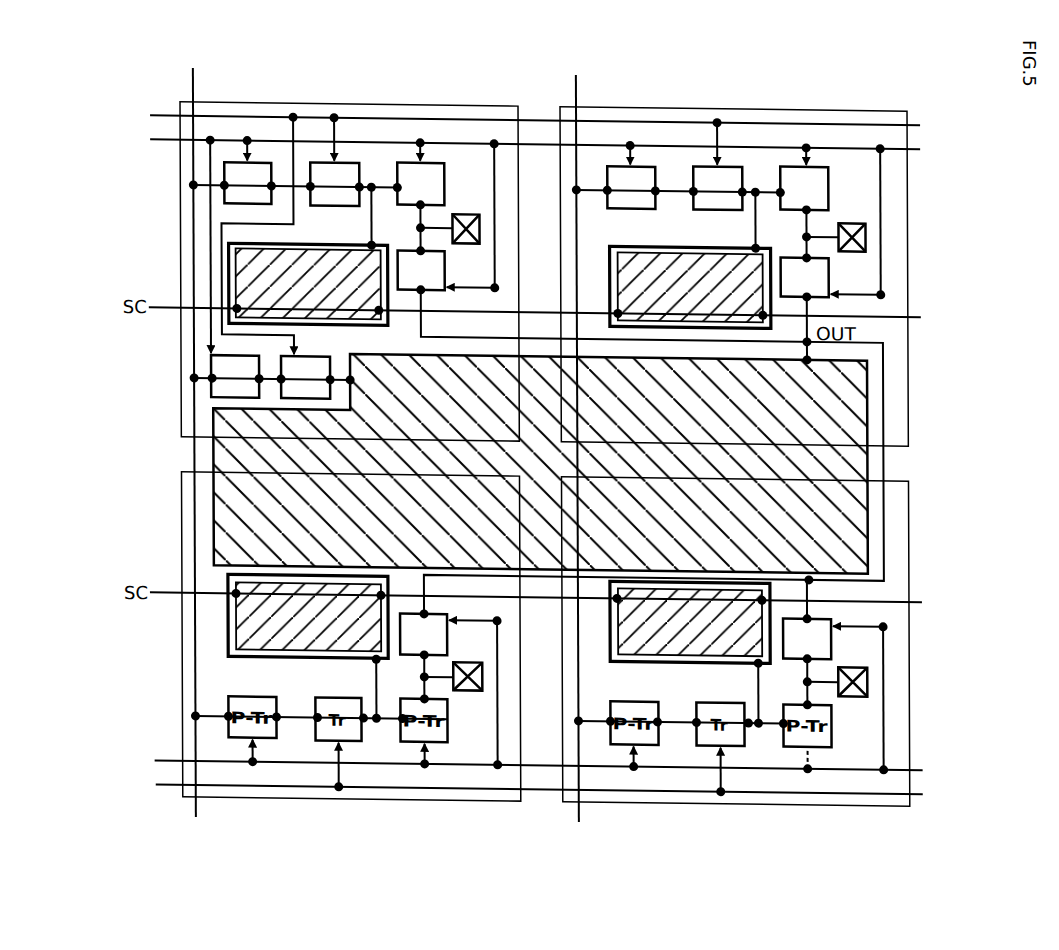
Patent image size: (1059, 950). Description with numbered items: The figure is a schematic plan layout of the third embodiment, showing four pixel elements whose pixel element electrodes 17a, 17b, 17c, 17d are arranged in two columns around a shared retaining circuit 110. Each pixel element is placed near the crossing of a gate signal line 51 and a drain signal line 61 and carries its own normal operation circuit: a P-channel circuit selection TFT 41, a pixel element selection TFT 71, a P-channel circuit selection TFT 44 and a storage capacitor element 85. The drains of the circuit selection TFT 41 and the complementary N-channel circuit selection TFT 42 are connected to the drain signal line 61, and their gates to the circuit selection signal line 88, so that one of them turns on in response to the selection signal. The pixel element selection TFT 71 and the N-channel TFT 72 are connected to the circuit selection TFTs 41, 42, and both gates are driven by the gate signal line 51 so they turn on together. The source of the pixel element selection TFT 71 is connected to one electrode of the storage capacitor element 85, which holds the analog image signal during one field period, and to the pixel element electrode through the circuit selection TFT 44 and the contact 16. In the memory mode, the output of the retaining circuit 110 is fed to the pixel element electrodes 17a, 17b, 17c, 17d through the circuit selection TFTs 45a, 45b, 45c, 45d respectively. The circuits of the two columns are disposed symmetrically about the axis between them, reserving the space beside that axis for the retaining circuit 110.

The P-channel circuit selection TFT 41 is at (264, 162).
The pixel element selection TFT 71 is at (352, 161).
The P-channel circuit selection TFT 44 is at (407, 160).
The contact 16 is at (479, 225).
The circuit selection TFT 45a is at (444, 267).
The circuit selection TFT 45b is at (828, 268).
The circuit selection TFT 45c is at (445, 633).
The circuit selection TFT 45d is at (829, 632).
The storage capacitor element 85 is at (247, 262).
The N-channel circuit selection TFT 42 is at (217, 366).
The N-channel TFT 72 is at (302, 353).
The retaining circuit 110 is at (218, 423).
The pixel element electrode 17a is at (202, 432).
The pixel element electrode 17b is at (888, 426).
The pixel element electrode 17c is at (210, 497).
The pixel element electrode 17d is at (897, 554).
The circuit selection signal line 88 is at (475, 453).
The gate signal line 51 is at (505, 453).
The drain signal line 61 is at (399, 435).